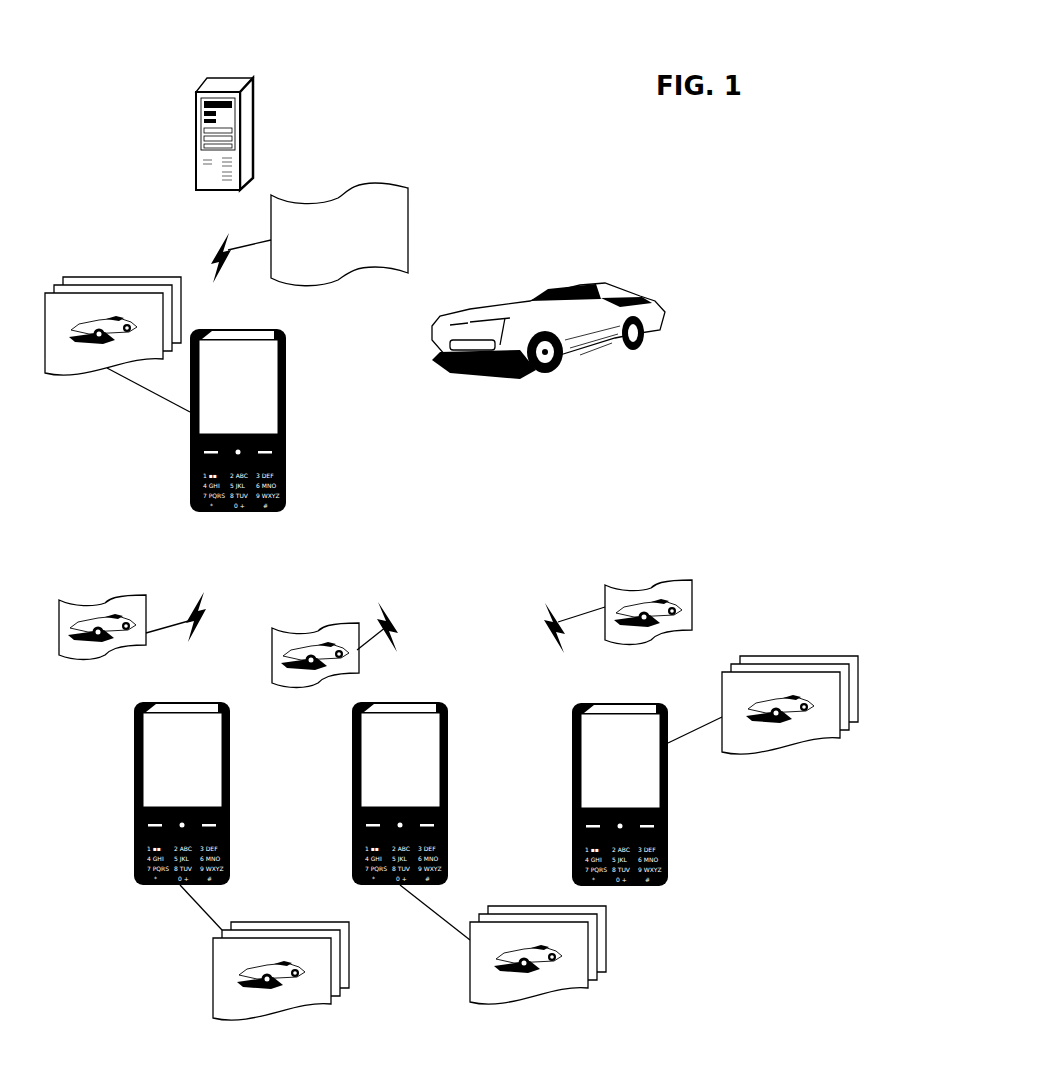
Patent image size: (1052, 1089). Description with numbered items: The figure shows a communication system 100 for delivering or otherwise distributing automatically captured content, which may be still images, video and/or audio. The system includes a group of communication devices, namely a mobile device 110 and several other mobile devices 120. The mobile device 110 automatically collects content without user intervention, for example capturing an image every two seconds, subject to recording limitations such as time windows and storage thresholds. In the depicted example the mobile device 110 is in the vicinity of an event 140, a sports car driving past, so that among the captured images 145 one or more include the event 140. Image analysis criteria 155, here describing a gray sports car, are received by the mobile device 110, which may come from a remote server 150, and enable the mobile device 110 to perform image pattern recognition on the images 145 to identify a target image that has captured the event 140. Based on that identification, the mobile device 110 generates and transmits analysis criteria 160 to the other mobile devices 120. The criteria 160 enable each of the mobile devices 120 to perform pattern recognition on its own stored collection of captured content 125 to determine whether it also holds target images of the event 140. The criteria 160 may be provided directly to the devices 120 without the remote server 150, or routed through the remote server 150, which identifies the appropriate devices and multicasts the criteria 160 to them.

The communication system 100 is at (748, 41).
The mobile device 110 is at (224, 404).
The mobile devices 120 is at (168, 776).
The captured content 125 is at (282, 921).
The event 140 is at (655, 300).
The images 145 is at (113, 276).
The remote server 150 is at (249, 136).
The image analysis criteria 155 is at (402, 230).
The analysis criteria 160 is at (108, 598).